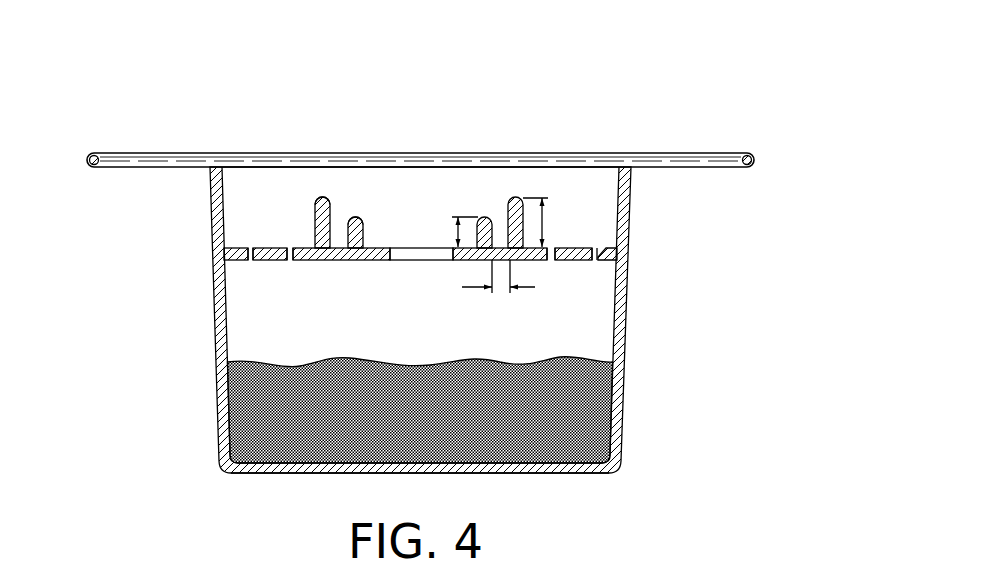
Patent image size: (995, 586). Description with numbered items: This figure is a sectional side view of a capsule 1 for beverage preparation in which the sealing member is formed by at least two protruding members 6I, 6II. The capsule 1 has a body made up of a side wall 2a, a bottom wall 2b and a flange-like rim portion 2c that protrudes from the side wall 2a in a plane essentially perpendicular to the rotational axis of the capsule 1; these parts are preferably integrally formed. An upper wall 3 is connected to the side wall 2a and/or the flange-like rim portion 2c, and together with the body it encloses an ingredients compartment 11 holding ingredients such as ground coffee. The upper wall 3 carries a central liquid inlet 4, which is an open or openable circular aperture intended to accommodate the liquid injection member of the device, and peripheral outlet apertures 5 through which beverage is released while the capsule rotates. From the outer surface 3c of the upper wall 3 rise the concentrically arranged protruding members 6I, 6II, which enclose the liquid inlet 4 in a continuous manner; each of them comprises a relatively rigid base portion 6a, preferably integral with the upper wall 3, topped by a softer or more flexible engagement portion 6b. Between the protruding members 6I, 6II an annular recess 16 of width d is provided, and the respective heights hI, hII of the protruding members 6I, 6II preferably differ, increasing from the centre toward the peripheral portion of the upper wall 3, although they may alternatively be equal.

The capsule 1 is at (644, 88).
The side wall 2a is at (631, 318).
The bottom wall 2b is at (563, 474).
The flange-like rim portion 2c is at (724, 162).
The upper wall 3 is at (568, 261).
The outer surface 3c is at (606, 248).
The central liquid inlet 4 is at (408, 261).
The peripheral outlet apertures 5 is at (248, 261).
The base portion 6a is at (315, 222).
The engagement portion 6b is at (355, 216).
The protruding member 6I is at (355, 261).
The protruding member 6II is at (322, 261).
The ingredients compartment 11 is at (600, 425).
The annular recess 16 is at (503, 240).
The height hI is at (459, 232).
The height hII is at (546, 222).
The width d is at (498, 287).